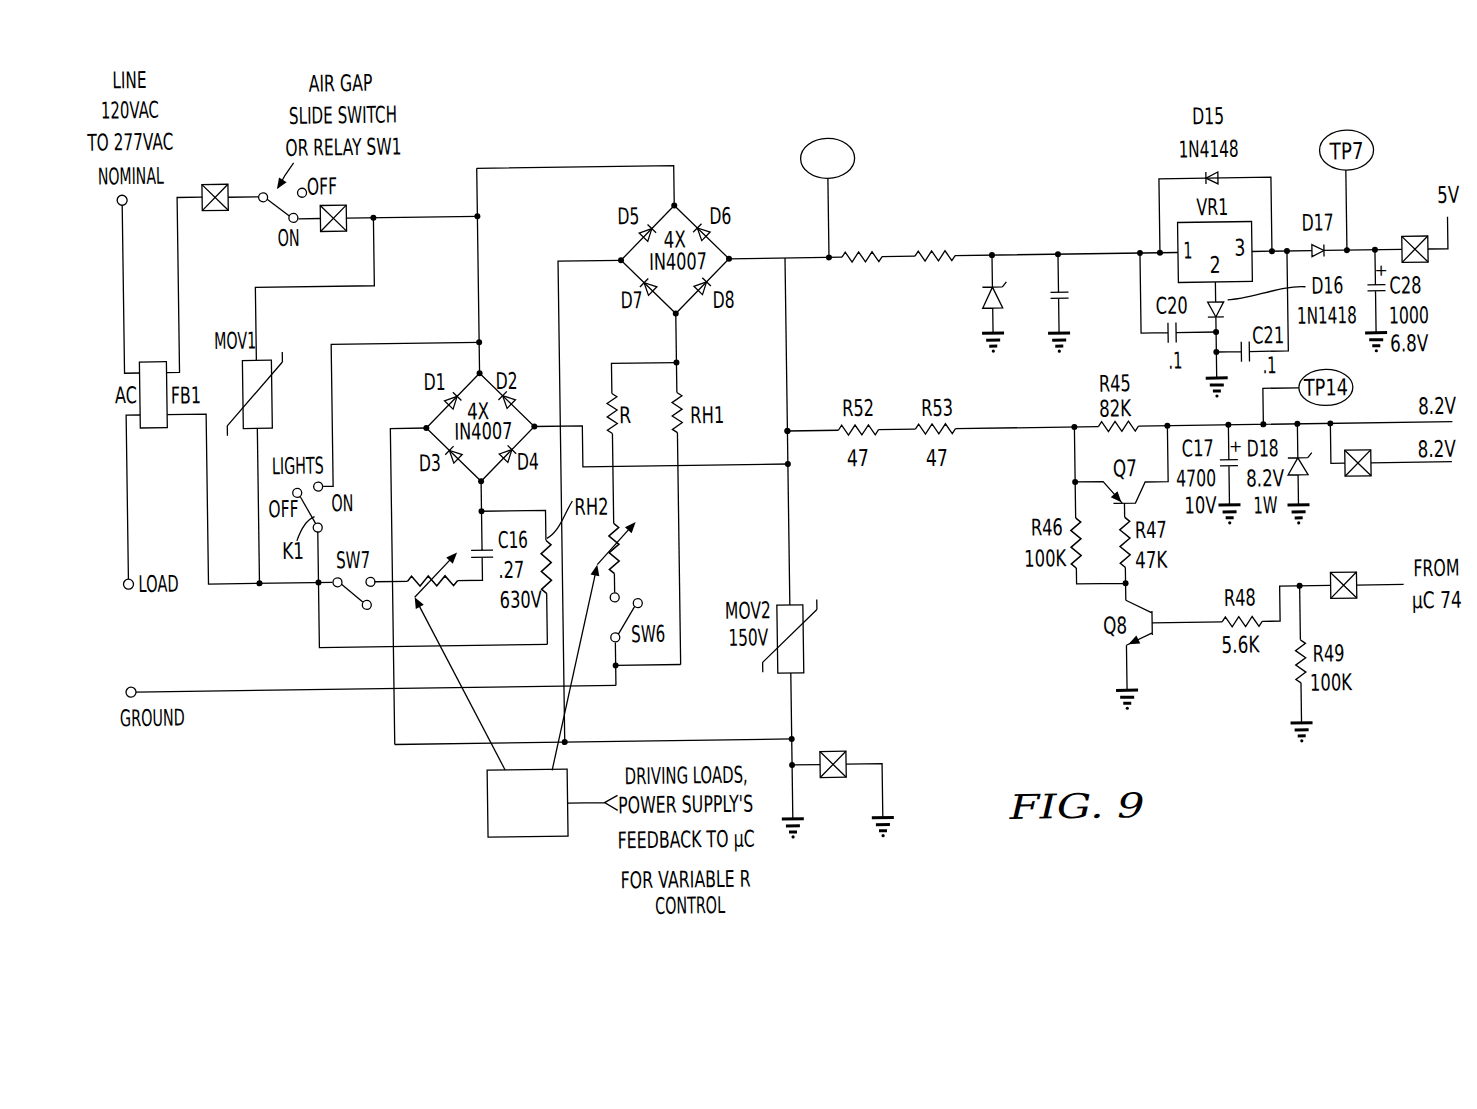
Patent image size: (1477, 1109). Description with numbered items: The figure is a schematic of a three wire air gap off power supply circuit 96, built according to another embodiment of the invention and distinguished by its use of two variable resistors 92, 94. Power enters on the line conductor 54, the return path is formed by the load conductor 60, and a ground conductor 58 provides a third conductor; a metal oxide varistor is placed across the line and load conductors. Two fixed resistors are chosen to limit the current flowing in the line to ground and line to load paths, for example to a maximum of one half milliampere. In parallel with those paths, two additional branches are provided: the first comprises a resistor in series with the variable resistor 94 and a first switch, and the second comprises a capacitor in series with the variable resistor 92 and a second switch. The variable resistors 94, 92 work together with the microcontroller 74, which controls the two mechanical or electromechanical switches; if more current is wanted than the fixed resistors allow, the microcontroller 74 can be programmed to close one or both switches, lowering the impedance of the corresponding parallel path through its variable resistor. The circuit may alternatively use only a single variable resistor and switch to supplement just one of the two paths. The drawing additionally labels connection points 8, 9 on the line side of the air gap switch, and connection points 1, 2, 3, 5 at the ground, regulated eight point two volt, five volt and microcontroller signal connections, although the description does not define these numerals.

The connector pin 1 is at (833, 782).
The connector pin 2 is at (1358, 480).
The connector pin 3 is at (1414, 233).
The connector pin 5 is at (1343, 601).
The line terminal 8 is at (215, 214).
The switched line terminal 9 is at (333, 239).
The line conductor 54 is at (127, 226).
The ground conductor 58 is at (222, 685).
The load conductor 60 is at (125, 469).
The microcontroller 74 is at (540, 834).
The variable resistor 92 is at (433, 564).
The variable resistor 94 is at (624, 558).
The power supply circuit 96 is at (936, 155).